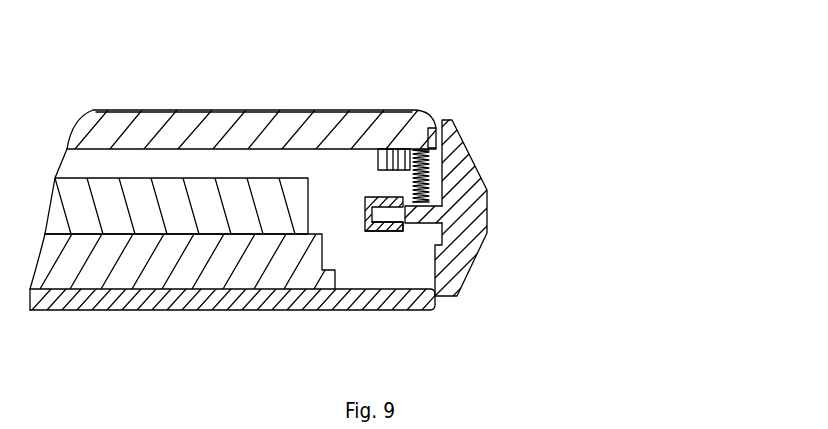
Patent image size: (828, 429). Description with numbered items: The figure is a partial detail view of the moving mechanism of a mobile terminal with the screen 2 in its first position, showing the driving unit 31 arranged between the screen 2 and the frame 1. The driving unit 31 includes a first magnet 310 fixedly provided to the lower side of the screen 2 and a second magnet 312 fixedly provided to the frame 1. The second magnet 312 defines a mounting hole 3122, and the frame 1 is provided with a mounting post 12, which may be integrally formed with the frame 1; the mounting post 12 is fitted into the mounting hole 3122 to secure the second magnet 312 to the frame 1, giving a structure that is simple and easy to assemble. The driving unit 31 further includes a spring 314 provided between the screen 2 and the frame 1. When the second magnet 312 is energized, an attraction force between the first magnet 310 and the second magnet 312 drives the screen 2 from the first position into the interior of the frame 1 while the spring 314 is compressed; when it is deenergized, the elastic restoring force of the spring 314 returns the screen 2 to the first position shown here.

The frame 1 is at (470, 232).
The mounting post 12 is at (402, 221).
The screen 2 is at (217, 122).
The driving unit 31 is at (655, 29).
The first magnet 310 is at (385, 150).
The second magnet 312 is at (412, 172).
The spring 314 is at (420, 205).
The mounting hole 3122 is at (368, 220).